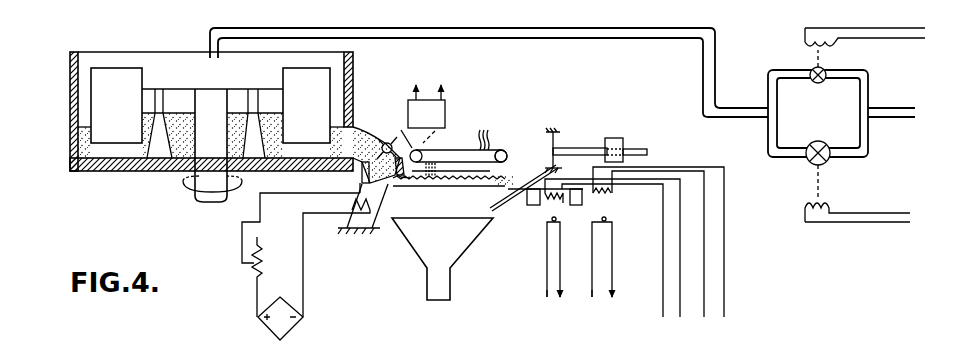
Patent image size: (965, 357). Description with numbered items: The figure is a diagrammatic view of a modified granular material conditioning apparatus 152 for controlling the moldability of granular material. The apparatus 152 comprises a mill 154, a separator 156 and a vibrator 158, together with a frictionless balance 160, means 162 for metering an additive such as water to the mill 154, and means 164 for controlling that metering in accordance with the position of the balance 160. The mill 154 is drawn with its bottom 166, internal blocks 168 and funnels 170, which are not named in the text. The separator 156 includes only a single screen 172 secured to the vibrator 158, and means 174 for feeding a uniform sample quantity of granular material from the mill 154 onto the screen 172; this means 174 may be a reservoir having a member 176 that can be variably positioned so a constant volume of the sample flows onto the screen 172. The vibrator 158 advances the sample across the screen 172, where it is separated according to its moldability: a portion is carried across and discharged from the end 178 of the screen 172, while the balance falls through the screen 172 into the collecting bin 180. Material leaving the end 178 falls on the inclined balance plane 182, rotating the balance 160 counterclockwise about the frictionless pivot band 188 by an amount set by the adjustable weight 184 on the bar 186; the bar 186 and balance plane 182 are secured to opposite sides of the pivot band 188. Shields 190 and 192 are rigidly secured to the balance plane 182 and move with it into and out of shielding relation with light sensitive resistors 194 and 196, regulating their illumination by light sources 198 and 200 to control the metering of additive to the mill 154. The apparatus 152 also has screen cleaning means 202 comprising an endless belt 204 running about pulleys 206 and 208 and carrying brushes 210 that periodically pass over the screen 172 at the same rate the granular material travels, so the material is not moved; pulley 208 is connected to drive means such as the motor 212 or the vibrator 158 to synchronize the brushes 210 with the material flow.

The granular material conditioning apparatus 152 is at (592, 82).
The mill 154 is at (68, 111).
The separator 156 is at (448, 182).
The vibrator 158 is at (352, 232).
The frictionless balance 160 is at (576, 146).
The means for metering an additive 162 is at (870, 100).
The means for controlling the metering of additive 164 is at (686, 166).
The container bottom 166 is at (112, 172).
The heating blocks 168 is at (142, 86).
The funnels 170 is at (243, 130).
The screen 172 is at (489, 190).
The means for feeding a uniform sample quantity 174 is at (358, 175).
The member 176 is at (408, 178).
The end of the screen 178 is at (510, 173).
The collecting bin 180 is at (472, 252).
The balance plane 182 is at (549, 140).
The adjustable weight 184 is at (616, 139).
The bar 186 is at (648, 151).
The frictionless pivot band 188 is at (556, 131).
The shield 190 is at (533, 206).
The shield 192 is at (585, 203).
The light sensitive resistor 194 is at (571, 207).
The light sensitive resistor 196 is at (614, 194).
The light source 198 is at (545, 236).
The light source 200 is at (612, 268).
The screen cleaning means 202 is at (449, 151).
The endless belt 204 is at (450, 164).
The pulley 206 is at (506, 157).
The pulley 208 is at (397, 137).
The brushes 210 is at (483, 140).
The motor 212 is at (445, 126).